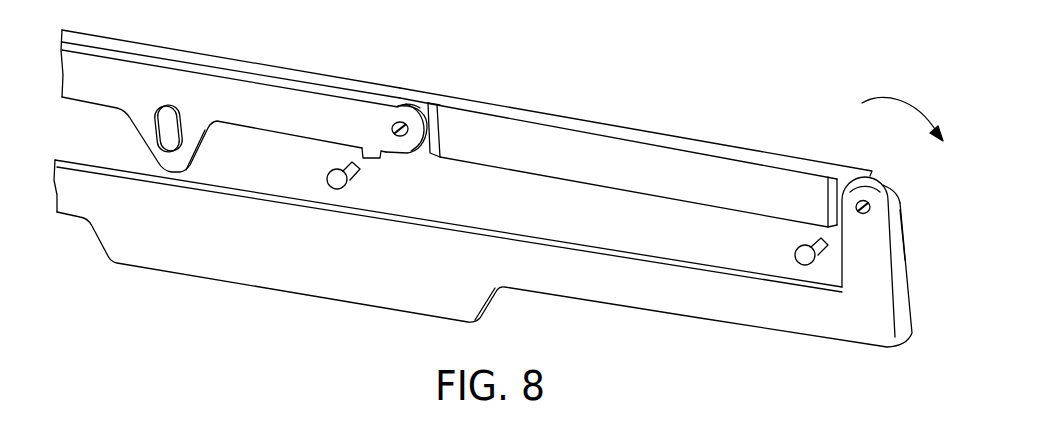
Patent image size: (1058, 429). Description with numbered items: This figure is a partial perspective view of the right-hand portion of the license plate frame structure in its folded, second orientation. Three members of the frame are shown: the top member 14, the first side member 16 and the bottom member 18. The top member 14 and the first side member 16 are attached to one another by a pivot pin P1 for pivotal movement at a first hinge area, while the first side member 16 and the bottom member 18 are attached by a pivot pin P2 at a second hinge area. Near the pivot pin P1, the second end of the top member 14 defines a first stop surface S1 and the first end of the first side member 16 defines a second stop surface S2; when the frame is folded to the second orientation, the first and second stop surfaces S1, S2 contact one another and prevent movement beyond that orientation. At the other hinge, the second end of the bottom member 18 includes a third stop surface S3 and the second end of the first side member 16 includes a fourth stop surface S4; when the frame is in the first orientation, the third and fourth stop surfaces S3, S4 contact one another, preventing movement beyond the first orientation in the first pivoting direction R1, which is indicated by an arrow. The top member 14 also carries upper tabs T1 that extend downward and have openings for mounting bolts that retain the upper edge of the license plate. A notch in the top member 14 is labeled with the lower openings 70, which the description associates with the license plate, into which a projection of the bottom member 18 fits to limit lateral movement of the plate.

The top member 14 is at (248, 77).
The first side member 16 is at (628, 162).
The bottom member 18 is at (308, 268).
The lower openings 70 is at (371, 153).
The upper tabs T1 is at (157, 142).
The pivot pin P1 is at (327, 177).
The pivot pin P2 is at (797, 247).
The first stop surface S1 is at (415, 92).
The second stop surface S2 is at (400, 100).
The third stop surface S3 is at (898, 203).
The fourth stop surface S4 is at (873, 173).
The first pivoting direction R1 is at (900, 98).